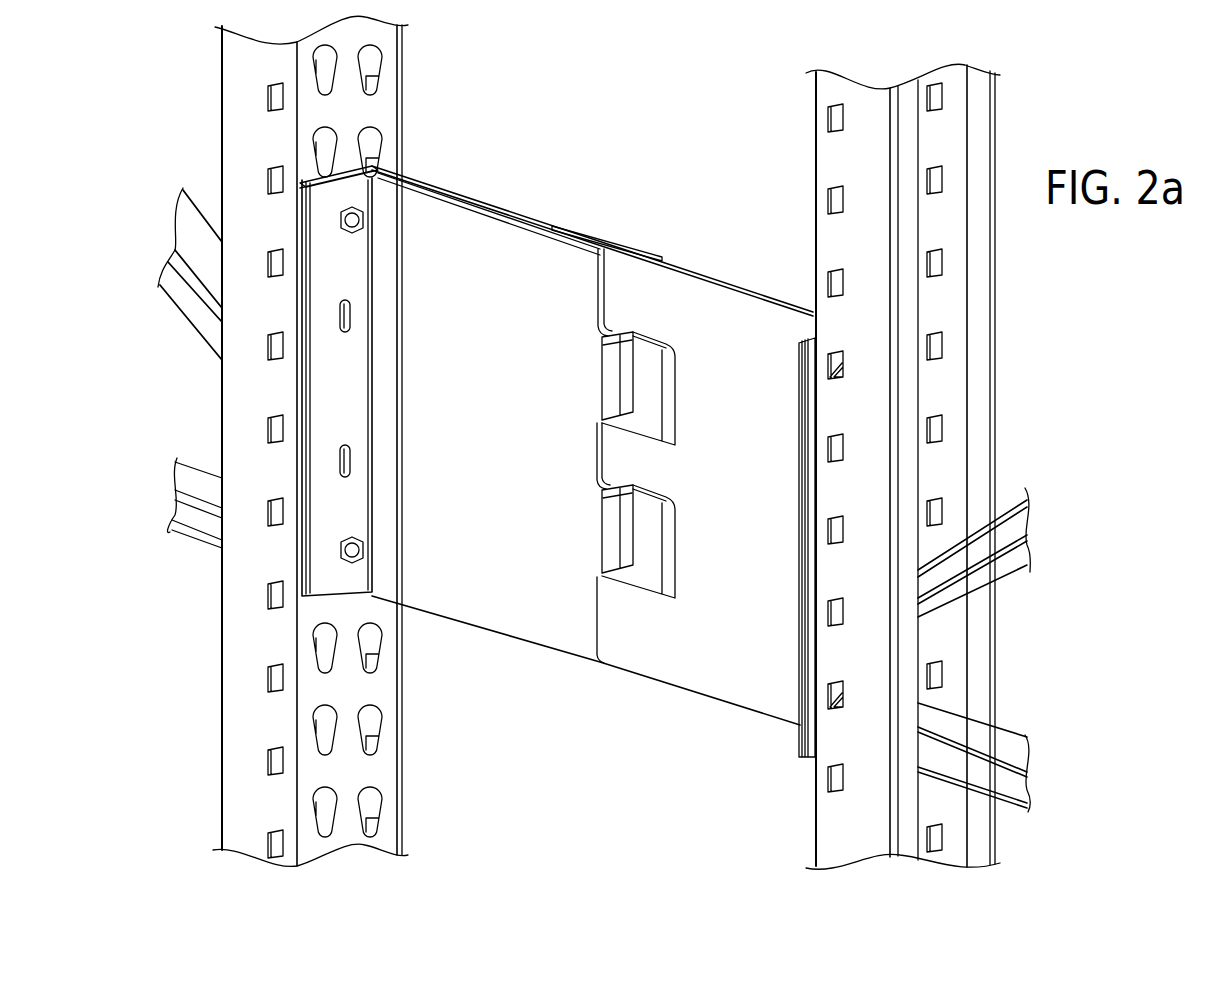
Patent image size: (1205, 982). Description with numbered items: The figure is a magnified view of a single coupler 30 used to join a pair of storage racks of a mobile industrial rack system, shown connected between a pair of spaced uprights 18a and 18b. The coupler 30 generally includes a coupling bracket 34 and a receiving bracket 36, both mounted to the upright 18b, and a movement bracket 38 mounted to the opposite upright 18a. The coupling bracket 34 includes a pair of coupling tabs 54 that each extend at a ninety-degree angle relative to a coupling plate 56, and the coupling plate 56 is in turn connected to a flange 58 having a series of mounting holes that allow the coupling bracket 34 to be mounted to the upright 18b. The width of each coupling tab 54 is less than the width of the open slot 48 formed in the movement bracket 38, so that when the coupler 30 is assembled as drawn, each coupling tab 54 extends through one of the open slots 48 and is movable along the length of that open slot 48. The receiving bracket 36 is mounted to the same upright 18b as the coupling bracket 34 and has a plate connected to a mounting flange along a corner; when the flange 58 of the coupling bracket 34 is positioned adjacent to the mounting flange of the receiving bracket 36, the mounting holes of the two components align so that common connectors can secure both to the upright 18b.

The upright 18a is at (818, 151).
The upright 18b is at (375, 106).
The coupler 30 is at (557, 445).
The coupling bracket 34 is at (542, 618).
The receiving bracket 36 is at (527, 207).
The movement bracket 38 is at (712, 678).
The open slot 48 is at (661, 338).
The coupling tab 54 is at (610, 384).
The coupling plate 56 is at (562, 296).
The flange 58 is at (353, 492).